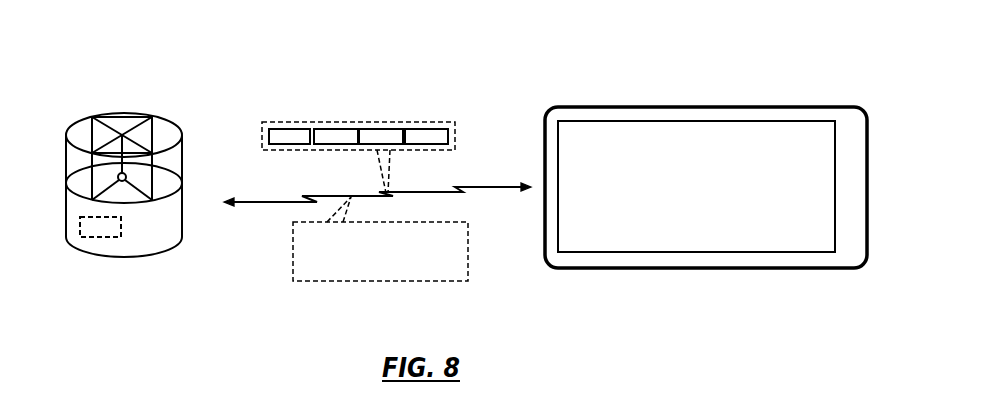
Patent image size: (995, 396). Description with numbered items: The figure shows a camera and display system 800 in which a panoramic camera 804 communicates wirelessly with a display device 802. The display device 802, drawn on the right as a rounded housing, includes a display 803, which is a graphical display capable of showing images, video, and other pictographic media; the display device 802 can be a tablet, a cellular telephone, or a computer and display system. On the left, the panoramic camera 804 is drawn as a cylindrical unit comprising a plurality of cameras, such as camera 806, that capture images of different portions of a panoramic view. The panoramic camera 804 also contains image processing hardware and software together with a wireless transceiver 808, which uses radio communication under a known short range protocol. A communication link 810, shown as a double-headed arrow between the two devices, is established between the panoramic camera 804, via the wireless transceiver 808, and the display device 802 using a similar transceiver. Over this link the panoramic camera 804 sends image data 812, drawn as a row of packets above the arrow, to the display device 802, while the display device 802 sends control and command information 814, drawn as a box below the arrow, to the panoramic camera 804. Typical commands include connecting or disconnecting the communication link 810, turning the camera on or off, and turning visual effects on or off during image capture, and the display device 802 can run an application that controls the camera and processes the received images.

The camera and display system 800 is at (790, 56).
The display device 802 is at (685, 107).
The display 803 is at (667, 253).
The panoramic camera 804 is at (126, 258).
The camera 806 is at (122, 183).
The wireless transceiver 808 is at (95, 240).
The communication link 810 is at (288, 203).
The image data 812 is at (370, 122).
The control and command information 814 is at (440, 282).